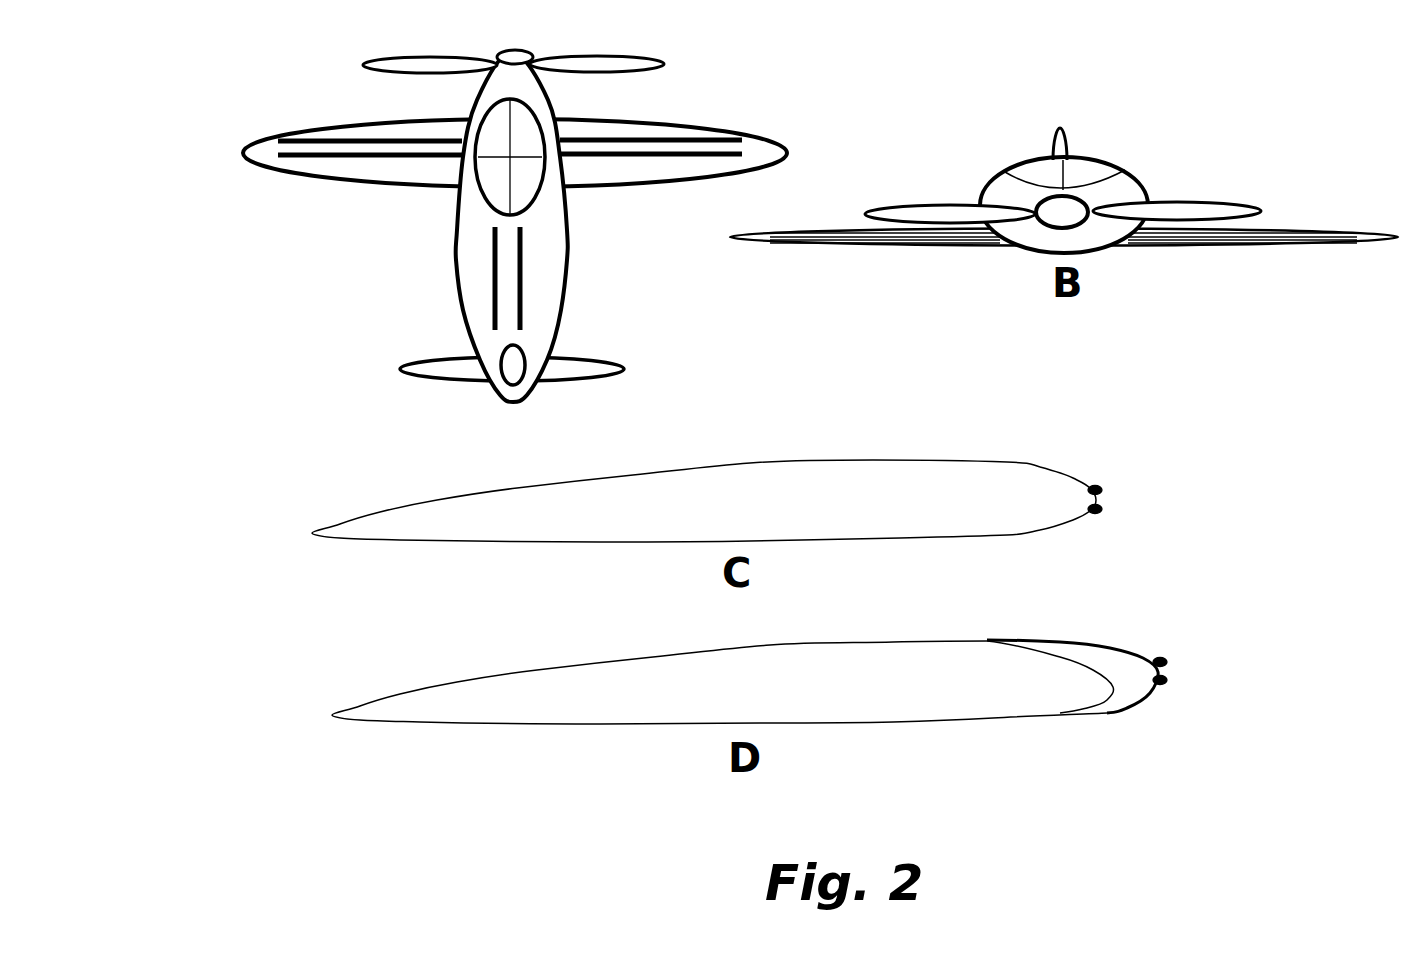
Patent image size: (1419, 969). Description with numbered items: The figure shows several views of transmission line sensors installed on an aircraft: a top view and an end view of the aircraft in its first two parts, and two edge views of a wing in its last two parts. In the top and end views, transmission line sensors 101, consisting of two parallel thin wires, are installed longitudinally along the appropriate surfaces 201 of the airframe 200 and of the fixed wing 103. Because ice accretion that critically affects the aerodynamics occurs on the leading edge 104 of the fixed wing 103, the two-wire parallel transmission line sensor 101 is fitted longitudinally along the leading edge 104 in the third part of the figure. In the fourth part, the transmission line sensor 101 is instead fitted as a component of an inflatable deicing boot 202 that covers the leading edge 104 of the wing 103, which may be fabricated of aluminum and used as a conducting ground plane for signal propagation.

The airframe 200 is at (333, 93).
The surfaces 201 is at (337, 140).
The fixed wing 103 is at (343, 183).
The leading edge 104 is at (755, 233).
The two-wire parallel transmission line sensor 101 is at (853, 235).
The inflatable deicing boot 202 is at (1088, 640).